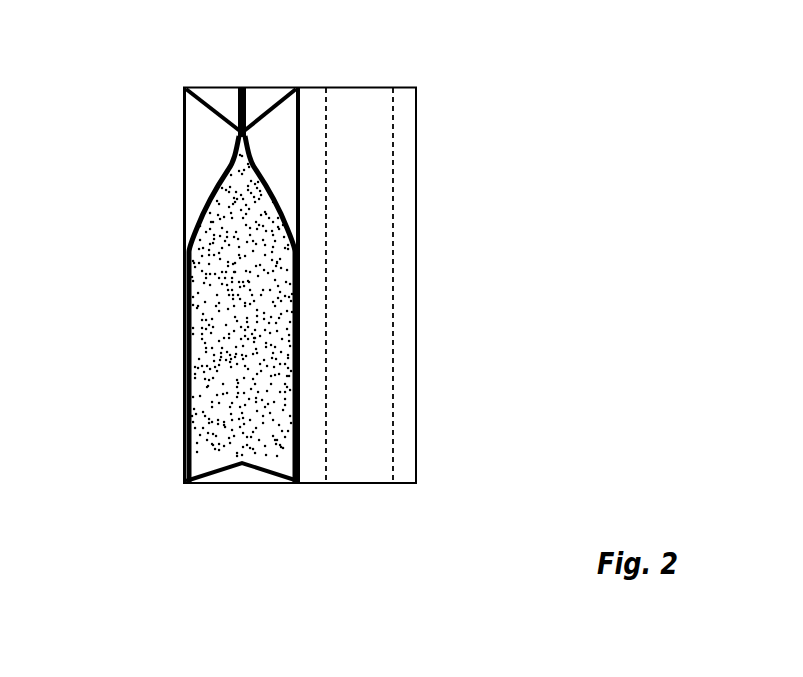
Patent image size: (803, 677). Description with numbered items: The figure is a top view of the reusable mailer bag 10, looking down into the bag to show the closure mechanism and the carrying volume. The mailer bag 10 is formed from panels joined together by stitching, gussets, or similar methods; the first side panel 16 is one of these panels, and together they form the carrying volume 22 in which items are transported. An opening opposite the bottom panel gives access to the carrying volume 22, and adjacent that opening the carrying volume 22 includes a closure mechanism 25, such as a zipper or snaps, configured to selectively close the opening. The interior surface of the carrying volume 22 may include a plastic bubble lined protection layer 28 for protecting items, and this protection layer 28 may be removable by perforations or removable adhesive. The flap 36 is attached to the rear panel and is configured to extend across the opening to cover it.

The mailer bag 10 is at (96, 28).
The first side panel 16 is at (241, 475).
The carrying volume 22 is at (221, 295).
The closure mechanism 25 is at (205, 183).
The protection layer 28 is at (208, 386).
The flap 36 is at (382, 169).